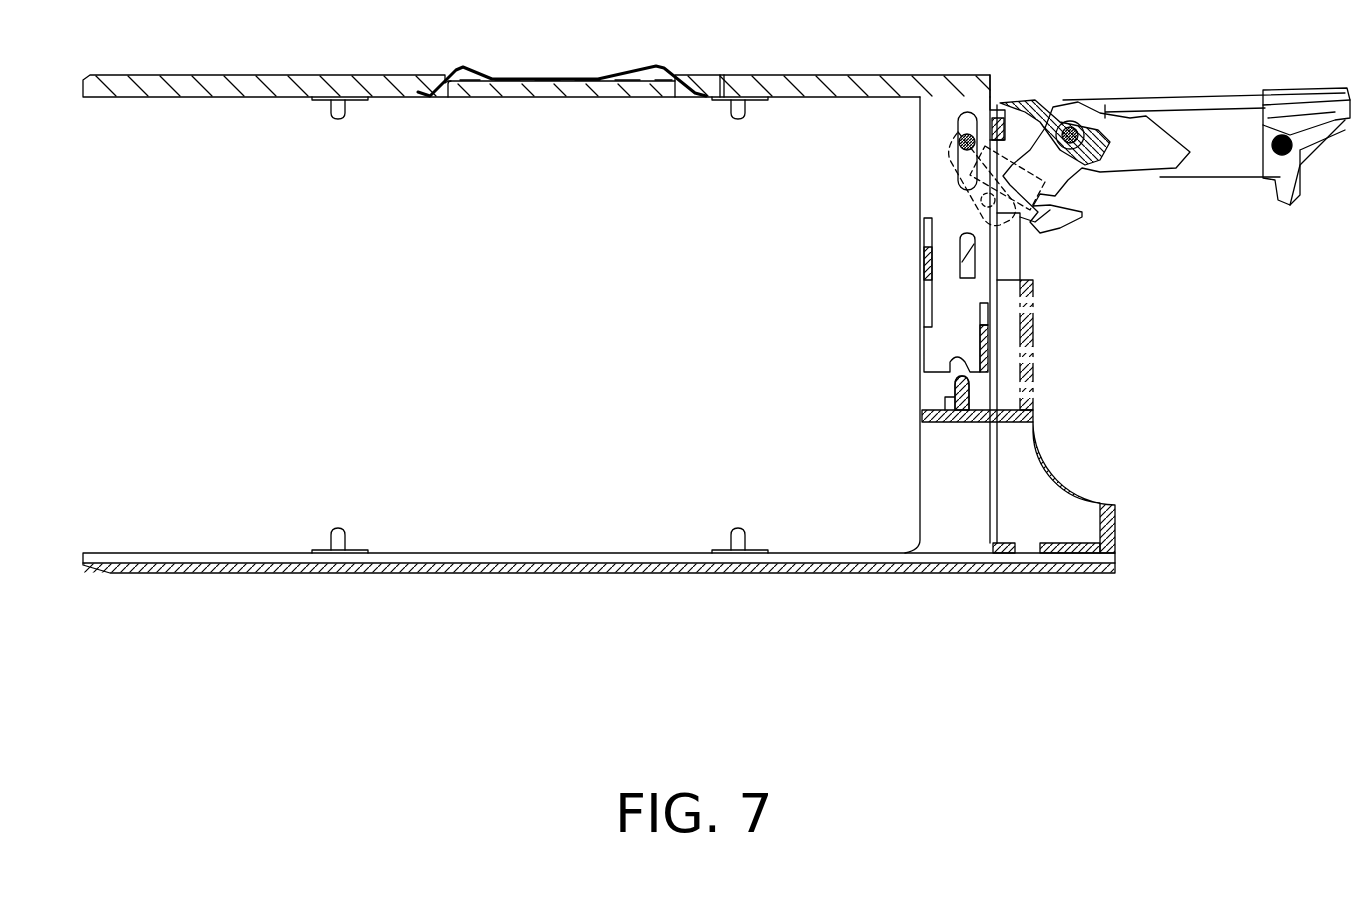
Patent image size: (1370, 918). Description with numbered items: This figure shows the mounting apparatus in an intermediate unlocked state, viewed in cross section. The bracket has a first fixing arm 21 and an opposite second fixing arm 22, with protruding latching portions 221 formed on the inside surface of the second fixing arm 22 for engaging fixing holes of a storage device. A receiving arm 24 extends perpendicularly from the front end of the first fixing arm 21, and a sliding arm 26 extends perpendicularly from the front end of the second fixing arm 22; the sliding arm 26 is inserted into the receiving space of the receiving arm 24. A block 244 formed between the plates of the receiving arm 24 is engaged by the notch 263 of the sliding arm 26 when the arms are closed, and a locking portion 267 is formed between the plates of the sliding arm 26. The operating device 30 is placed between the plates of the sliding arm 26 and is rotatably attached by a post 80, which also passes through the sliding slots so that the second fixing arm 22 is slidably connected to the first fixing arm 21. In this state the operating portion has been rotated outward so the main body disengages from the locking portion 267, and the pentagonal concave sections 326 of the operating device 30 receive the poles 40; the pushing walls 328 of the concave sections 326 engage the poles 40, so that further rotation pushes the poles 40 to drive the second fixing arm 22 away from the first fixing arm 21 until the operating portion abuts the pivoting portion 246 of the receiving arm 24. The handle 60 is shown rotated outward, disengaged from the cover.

The first fixing arm 21 is at (560, 573).
The second fixing arm 22 is at (790, 75).
The latching portions 221 is at (345, 112).
The receiving arm 24 is at (952, 497).
The block 244 is at (955, 390).
The pivoting portion 246 is at (1076, 112).
The sliding arm 26 is at (935, 120).
The notch 263 is at (990, 348).
The locking portion 267 is at (960, 262).
The operating device 30 is at (1098, 178).
The concave sections 326 is at (985, 188).
The pushing wall 328 is at (1040, 225).
The poles 40 is at (975, 205).
The handle 60 is at (1290, 90).
The post 80 is at (955, 144).